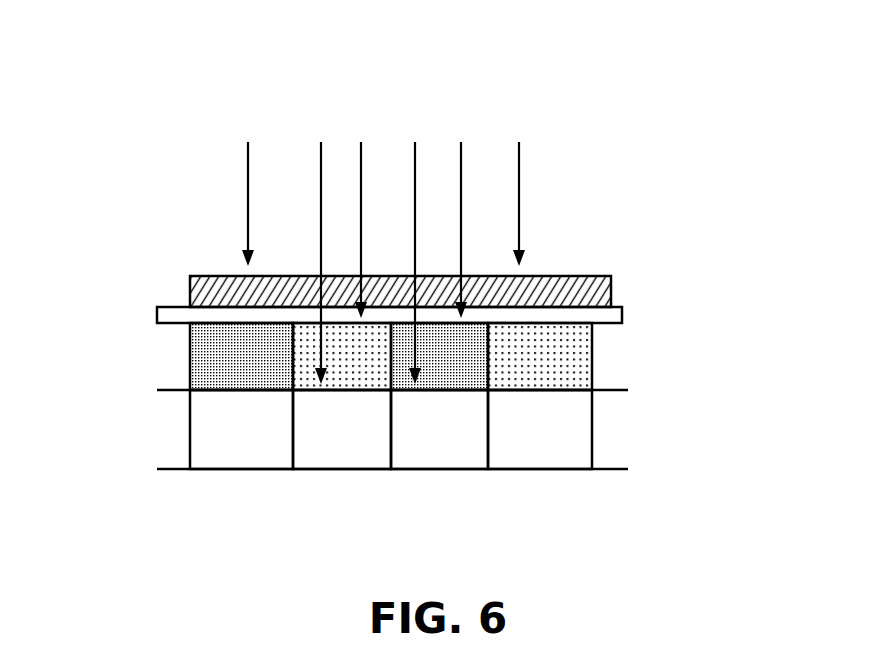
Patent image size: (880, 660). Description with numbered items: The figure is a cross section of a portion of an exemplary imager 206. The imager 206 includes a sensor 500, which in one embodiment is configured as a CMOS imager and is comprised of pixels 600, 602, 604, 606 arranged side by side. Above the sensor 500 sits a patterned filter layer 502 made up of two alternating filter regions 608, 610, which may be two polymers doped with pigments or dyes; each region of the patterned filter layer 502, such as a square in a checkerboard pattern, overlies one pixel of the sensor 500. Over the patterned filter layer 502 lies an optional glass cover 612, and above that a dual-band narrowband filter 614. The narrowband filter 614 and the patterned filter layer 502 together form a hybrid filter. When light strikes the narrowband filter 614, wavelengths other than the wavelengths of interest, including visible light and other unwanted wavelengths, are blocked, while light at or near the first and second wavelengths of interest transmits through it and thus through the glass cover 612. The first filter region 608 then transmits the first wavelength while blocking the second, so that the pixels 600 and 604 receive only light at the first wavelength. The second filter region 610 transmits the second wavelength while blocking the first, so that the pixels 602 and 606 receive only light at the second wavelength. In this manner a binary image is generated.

The imager 206 is at (208, 46).
The sensor 500 is at (334, 429).
The patterned filter layer 502 is at (388, 356).
The pixel 600 is at (222, 441).
The pixel 602 is at (323, 441).
The pixel 604 is at (421, 441).
The pixel 606 is at (521, 441).
The filter region 608 is at (474, 373).
The filter region 610 is at (572, 342).
The glass cover 612 is at (147, 295).
The dual-band narrowband filter 614 is at (199, 260).